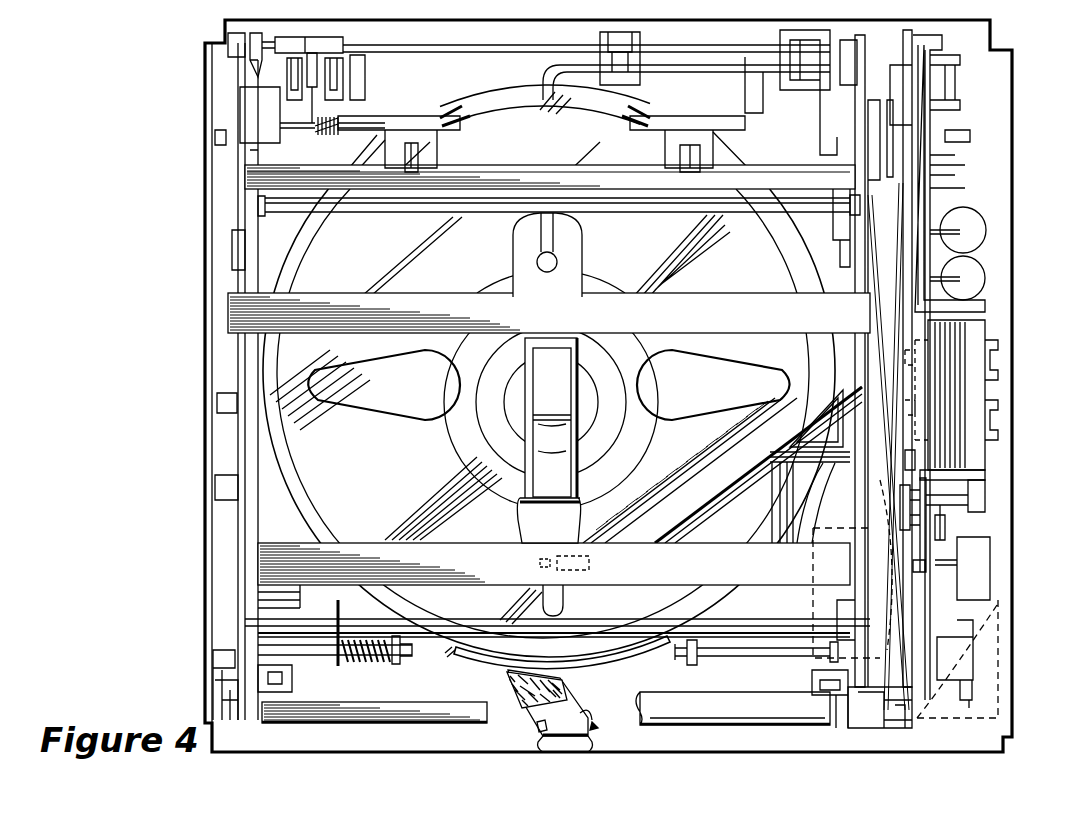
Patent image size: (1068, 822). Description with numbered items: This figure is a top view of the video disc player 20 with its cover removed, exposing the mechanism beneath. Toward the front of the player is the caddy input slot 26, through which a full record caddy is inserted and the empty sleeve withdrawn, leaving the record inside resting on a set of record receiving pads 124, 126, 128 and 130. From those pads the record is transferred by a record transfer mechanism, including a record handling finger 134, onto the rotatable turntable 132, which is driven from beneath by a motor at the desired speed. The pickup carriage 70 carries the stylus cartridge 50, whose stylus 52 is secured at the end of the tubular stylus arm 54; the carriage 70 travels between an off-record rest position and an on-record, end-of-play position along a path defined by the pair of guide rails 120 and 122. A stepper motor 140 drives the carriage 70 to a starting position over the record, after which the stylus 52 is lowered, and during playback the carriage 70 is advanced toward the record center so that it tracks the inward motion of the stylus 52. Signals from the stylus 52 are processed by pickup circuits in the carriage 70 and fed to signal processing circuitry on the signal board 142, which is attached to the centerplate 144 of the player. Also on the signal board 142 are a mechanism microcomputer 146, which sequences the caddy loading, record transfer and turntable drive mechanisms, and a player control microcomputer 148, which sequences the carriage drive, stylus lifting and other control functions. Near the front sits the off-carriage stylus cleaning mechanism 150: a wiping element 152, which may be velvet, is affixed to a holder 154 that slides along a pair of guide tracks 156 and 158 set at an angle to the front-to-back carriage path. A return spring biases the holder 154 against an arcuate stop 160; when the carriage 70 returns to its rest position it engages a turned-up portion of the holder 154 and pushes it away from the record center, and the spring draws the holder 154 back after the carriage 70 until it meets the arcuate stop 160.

The video disc player 20 is at (166, 153).
The caddy input slot 26 is at (818, 744).
The stylus cartridge 50 is at (592, 563).
The stylus 52 is at (540, 563).
The stylus arm 54 is at (580, 577).
The pickup carriage 70 is at (745, 575).
The guide rail 120 is at (256, 604).
The guide rail 122 is at (848, 598).
The record receiving pad 124 is at (336, 637).
The record receiving pad 126 is at (740, 634).
The record receiving pad 128 is at (377, 120).
The record receiving pad 130 is at (672, 125).
The turntable 132 is at (488, 268).
The record handling finger 134 is at (558, 263).
The stepper motor 140 is at (990, 562).
The signal board 142 is at (998, 713).
The centerplate 144 is at (462, 750).
The mechanism microcomputer 146 is at (918, 386).
The player control microcomputer 148 is at (813, 567).
The stylus cleaning mechanism 150 is at (598, 724).
The wiping element 152 is at (510, 682).
The holder 154 is at (542, 729).
The guide track 156 is at (541, 742).
The guide track 158 is at (588, 740).
The arcuate stop 160 is at (637, 656).